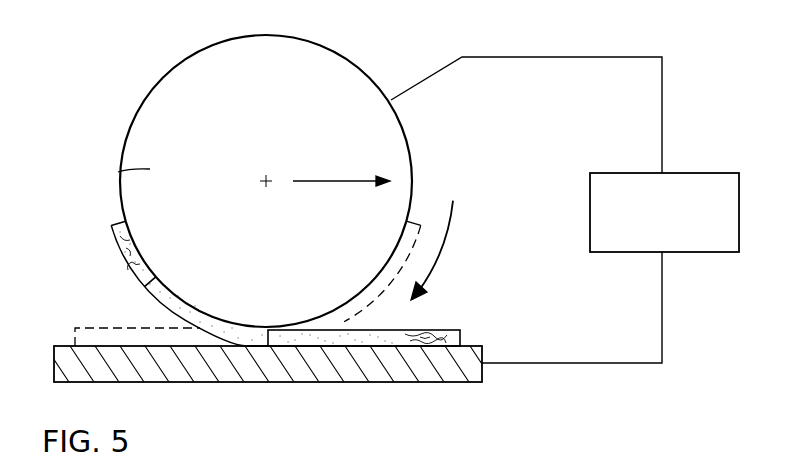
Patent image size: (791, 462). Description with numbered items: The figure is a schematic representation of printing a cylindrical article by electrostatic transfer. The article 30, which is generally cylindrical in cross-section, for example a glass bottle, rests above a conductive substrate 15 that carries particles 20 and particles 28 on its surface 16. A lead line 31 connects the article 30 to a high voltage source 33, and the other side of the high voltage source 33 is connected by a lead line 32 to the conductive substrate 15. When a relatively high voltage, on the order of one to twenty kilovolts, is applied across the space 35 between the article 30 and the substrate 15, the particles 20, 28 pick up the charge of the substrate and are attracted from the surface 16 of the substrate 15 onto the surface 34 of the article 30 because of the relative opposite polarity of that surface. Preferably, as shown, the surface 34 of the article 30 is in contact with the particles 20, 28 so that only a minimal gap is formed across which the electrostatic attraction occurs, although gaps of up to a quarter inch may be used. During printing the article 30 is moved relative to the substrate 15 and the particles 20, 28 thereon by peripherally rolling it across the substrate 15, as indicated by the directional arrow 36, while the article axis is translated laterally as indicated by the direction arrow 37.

The conductive substrate 15 is at (377, 368).
The surface of the substrate 16 is at (130, 348).
The particles 20 is at (206, 322).
The particles 28 is at (124, 260).
The article 30 is at (351, 56).
The lead line 31 is at (484, 58).
The lead line 32 is at (563, 363).
The high voltage source 33 is at (590, 200).
The surface of the article 34 is at (123, 170).
The space 35 is at (248, 343).
The directional arrow 36 is at (448, 232).
The direction arrow 37 is at (300, 178).